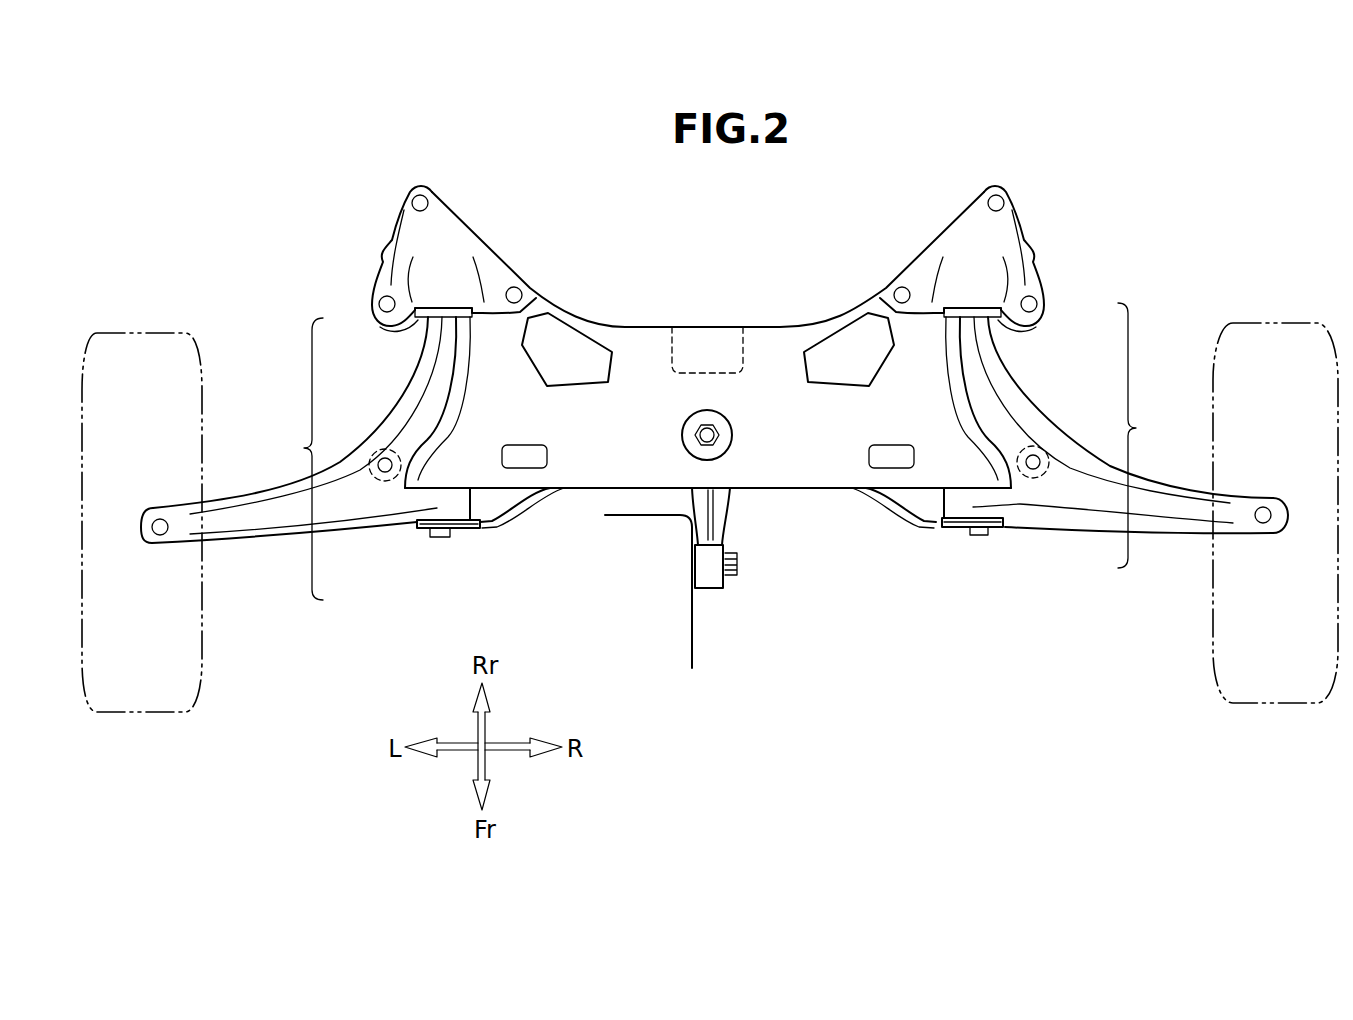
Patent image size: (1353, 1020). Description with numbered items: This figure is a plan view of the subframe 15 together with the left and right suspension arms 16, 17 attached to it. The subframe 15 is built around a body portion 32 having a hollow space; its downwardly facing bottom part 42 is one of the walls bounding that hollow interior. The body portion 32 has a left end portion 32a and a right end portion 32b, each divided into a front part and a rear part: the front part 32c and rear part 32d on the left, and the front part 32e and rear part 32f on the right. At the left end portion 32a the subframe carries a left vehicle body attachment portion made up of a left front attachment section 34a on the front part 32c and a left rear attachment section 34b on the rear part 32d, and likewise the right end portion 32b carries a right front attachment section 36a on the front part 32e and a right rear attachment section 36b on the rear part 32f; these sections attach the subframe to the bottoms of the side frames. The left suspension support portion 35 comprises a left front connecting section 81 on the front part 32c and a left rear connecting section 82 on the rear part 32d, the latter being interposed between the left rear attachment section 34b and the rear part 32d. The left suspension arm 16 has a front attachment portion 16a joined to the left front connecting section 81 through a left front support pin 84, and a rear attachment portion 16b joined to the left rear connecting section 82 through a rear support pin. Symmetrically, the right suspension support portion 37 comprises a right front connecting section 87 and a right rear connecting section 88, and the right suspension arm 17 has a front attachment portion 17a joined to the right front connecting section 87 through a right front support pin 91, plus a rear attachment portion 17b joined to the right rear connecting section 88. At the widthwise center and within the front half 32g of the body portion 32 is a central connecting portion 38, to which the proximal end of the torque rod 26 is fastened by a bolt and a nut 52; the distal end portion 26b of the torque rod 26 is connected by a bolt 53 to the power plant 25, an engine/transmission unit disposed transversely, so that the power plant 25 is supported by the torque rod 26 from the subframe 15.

The subframe 15 is at (370, 145).
The left suspension arm 16 is at (243, 544).
The front attachment portion 16a is at (443, 532).
The rear attachment portion 16b is at (447, 306).
The right suspension arm 17 is at (1163, 537).
The front attachment portion 17a is at (967, 512).
The rear attachment portion 17b is at (976, 305).
The power plant 25 is at (688, 640).
The torque rod 26 is at (728, 514).
The distal end portion 26b is at (702, 566).
The body portion 32 is at (653, 326).
The left end portion 32a is at (507, 371).
The right end portion 32b is at (917, 350).
The front part 32c is at (455, 478).
The rear part 32d is at (493, 288).
The front part 32e is at (960, 474).
The rear part 32f is at (923, 312).
The front half 32g is at (675, 452).
The left front attachment section 34a is at (378, 450).
The left rear attachment section 34b is at (382, 283).
The left suspension support portion 35 is at (295, 459).
The right front attachment section 36a is at (1040, 448).
The right rear attachment section 36b is at (1038, 270).
The right suspension support portion 37 is at (1143, 435).
The central connecting portion 38 is at (732, 434).
The bottom part 42 is at (767, 347).
The nut 52 is at (695, 425).
The bolt 53 is at (740, 565).
The left front connecting section 81 is at (420, 533).
The left rear connecting section 82 is at (395, 335).
The left front support pin 84 is at (435, 540).
The right front connecting section 87 is at (1005, 533).
The right rear connecting section 88 is at (1040, 318).
The right front support pin 91 is at (978, 537).